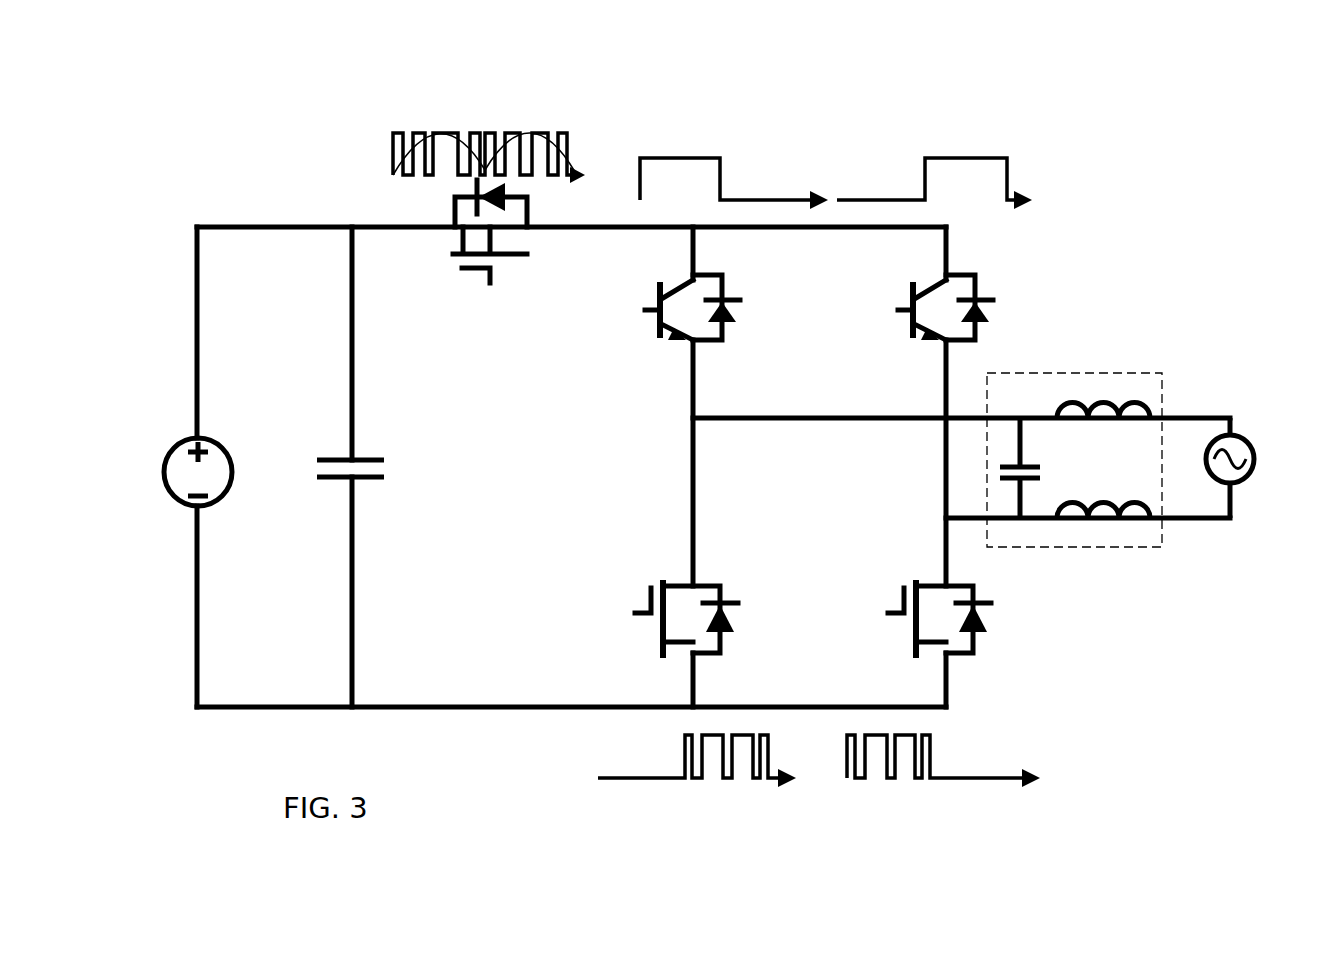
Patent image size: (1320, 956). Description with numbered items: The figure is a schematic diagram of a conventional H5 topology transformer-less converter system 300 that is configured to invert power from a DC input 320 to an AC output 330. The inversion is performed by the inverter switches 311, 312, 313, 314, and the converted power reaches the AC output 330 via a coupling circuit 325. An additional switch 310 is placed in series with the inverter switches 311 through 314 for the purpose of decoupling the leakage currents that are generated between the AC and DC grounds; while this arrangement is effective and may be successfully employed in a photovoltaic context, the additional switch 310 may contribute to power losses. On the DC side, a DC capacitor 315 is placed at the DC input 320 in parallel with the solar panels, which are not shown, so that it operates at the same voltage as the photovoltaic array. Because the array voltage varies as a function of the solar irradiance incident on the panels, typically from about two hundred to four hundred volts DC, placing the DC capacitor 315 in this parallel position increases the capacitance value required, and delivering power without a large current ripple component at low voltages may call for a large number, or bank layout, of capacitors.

The transformer-less converter system 300 is at (970, 115).
The additional switch 310 is at (490, 251).
The inverter switch 311 is at (728, 307).
The inverter switch 312 is at (970, 307).
The inverter switch 313 is at (713, 619).
The inverter switch 314 is at (965, 619).
The DC capacitor 315 is at (381, 468).
The DC input 320 is at (176, 472).
The coupling circuit 325 is at (1083, 358).
The AC output 330 is at (1244, 468).